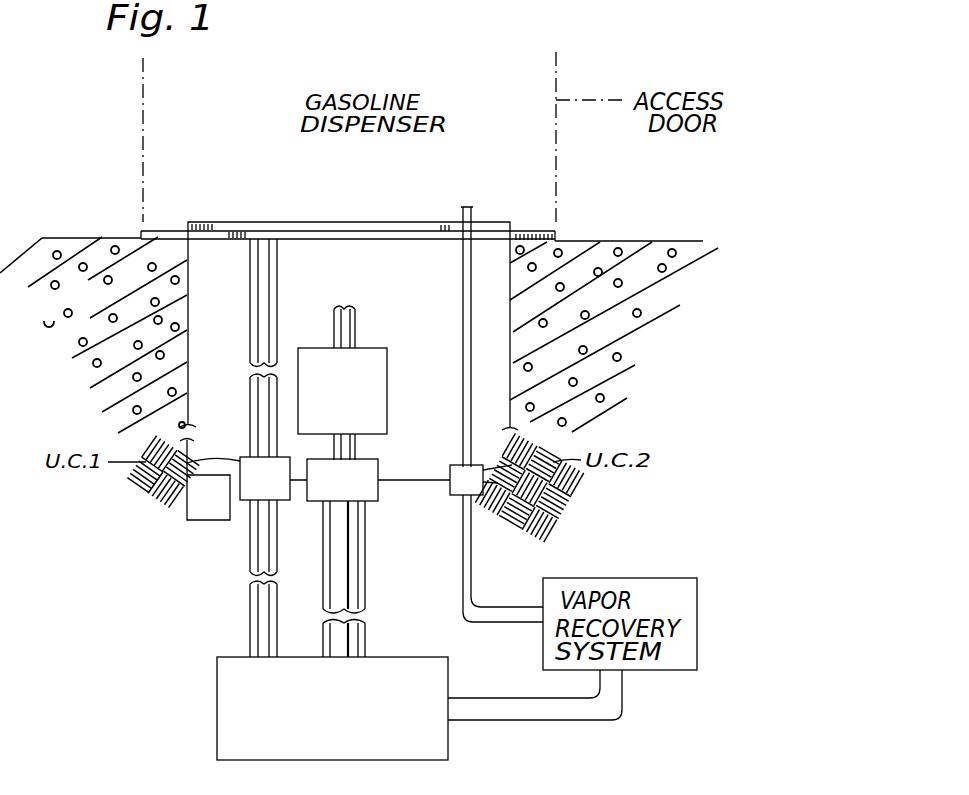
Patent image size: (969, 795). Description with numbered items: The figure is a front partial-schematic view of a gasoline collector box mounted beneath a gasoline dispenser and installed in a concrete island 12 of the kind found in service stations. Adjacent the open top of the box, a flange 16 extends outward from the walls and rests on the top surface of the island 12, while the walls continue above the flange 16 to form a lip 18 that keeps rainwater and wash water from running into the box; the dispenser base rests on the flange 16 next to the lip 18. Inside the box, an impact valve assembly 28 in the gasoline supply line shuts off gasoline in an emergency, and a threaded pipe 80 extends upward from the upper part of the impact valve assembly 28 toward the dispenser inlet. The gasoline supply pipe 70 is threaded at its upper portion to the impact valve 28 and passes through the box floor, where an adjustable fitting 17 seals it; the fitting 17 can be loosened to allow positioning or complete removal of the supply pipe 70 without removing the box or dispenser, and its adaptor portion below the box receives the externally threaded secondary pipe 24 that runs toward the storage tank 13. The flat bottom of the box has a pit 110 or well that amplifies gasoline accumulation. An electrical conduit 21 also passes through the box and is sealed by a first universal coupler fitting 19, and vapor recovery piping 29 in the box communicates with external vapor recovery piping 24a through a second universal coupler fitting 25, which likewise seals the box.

The concrete island 12 is at (652, 242).
The flange 16 is at (553, 224).
The lip 18 is at (517, 227).
The product riser pipe 80 is at (334, 323).
The impact valve assembly 28 is at (378, 348).
The vapor recovery piping 29 is at (465, 360).
The gasoline supply pipe 70 is at (357, 443).
The adjustable fitting 17 is at (379, 467).
The second universal coupler fitting 25 is at (452, 497).
The pit 110 is at (187, 506).
The first universal coupler fitting 19 is at (284, 505).
The secondary pipe 24 is at (367, 574).
The vapor recovery piping 24a is at (474, 552).
The electrical conduit 21 is at (248, 603).
The storage tank 13 is at (387, 658).